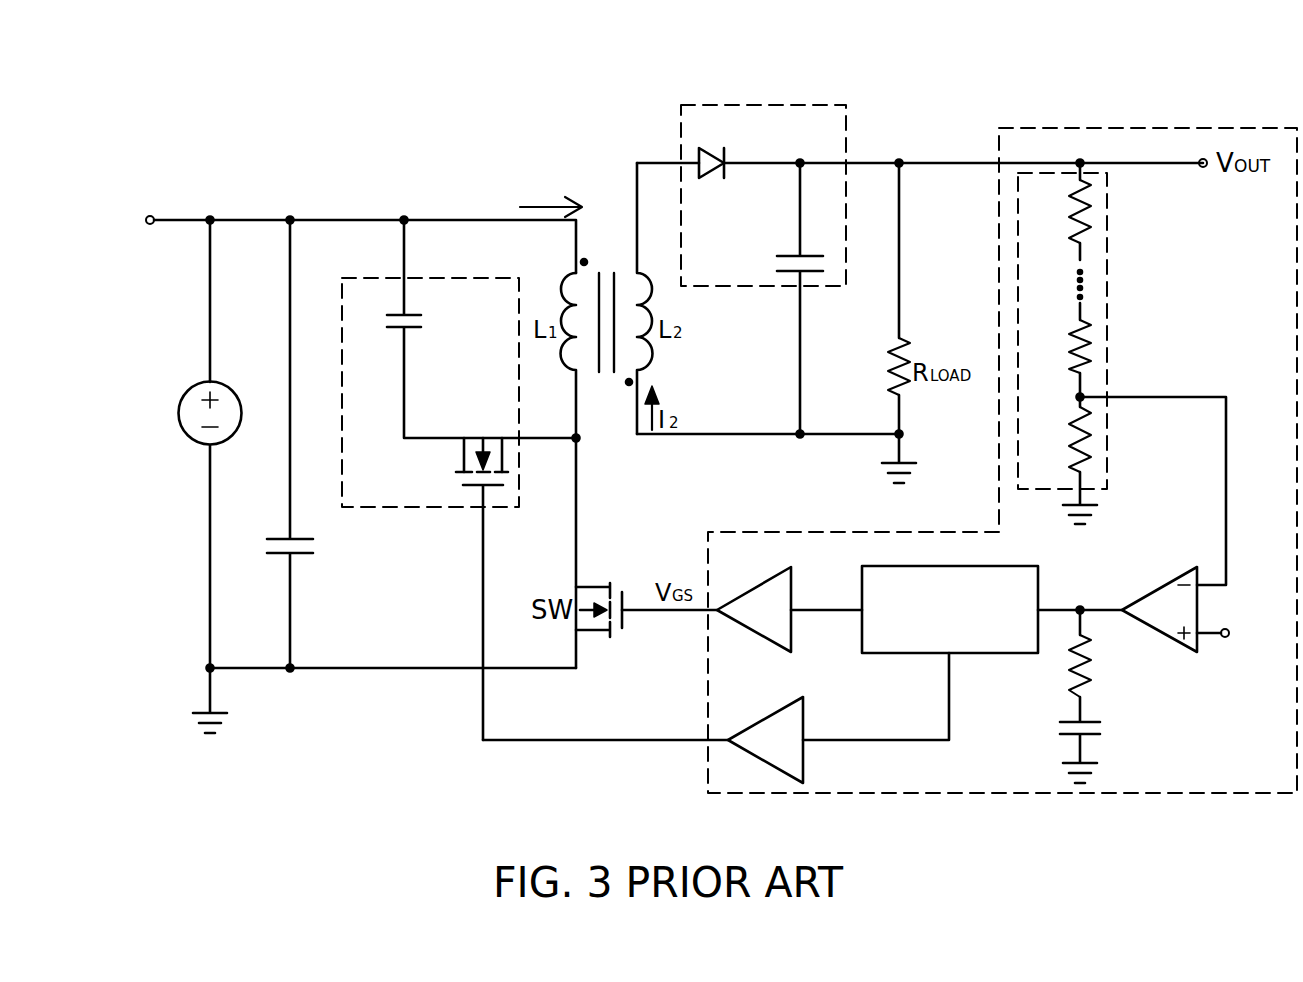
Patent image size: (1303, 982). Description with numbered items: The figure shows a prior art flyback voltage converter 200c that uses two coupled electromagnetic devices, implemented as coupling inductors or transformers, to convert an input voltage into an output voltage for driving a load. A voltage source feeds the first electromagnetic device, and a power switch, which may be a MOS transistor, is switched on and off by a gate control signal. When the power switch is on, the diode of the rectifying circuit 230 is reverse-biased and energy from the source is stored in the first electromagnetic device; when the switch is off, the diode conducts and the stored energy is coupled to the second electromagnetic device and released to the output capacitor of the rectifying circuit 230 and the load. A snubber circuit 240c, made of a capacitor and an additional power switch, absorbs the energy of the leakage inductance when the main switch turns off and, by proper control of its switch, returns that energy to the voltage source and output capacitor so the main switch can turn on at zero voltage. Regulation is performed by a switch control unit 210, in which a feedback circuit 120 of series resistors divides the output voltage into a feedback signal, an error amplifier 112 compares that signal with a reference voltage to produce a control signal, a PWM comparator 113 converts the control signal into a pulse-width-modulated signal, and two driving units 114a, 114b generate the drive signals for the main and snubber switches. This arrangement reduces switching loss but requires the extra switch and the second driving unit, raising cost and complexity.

The prior art flyback voltage converter 200c is at (289, 152).
The snubber circuit 240c is at (394, 508).
The rectifying circuit 230 is at (750, 287).
The feedback circuit 120 is at (1107, 318).
The switch control unit 210 is at (708, 673).
The driving unit 114a is at (754, 636).
The driving unit 114b is at (766, 766).
The pulse width modulation comparator 113 is at (1002, 655).
The error amplifier 112 is at (1160, 636).